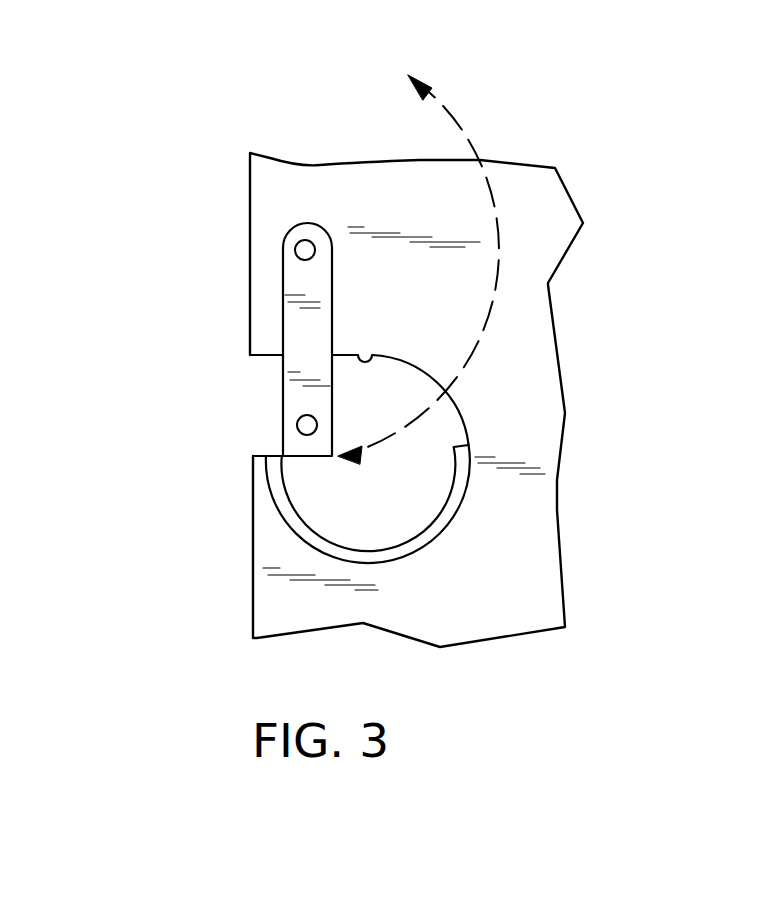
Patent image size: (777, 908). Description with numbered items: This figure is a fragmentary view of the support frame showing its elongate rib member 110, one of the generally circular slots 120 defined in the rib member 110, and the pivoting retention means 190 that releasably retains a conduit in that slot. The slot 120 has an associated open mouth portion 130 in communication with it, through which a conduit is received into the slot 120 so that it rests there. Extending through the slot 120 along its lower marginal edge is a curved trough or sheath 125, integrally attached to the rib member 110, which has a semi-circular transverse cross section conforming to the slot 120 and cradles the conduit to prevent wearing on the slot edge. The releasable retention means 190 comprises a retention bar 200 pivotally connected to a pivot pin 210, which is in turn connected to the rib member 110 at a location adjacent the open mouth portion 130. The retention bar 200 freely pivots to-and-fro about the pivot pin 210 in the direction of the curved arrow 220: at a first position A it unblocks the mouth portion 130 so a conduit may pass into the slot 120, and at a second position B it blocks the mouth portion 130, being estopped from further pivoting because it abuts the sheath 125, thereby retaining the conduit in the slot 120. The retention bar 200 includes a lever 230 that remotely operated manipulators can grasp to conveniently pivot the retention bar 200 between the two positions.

The rib member 110 is at (258, 211).
The slot 120 is at (372, 355).
The sheath 125 is at (440, 533).
The open mouth portion 130 is at (268, 358).
The releasable retention means 190 is at (182, 339).
The retention bar 200 is at (261, 339).
The pivot pin 210 is at (306, 249).
The curved arrow 220 is at (502, 263).
The lever 230 is at (297, 431).